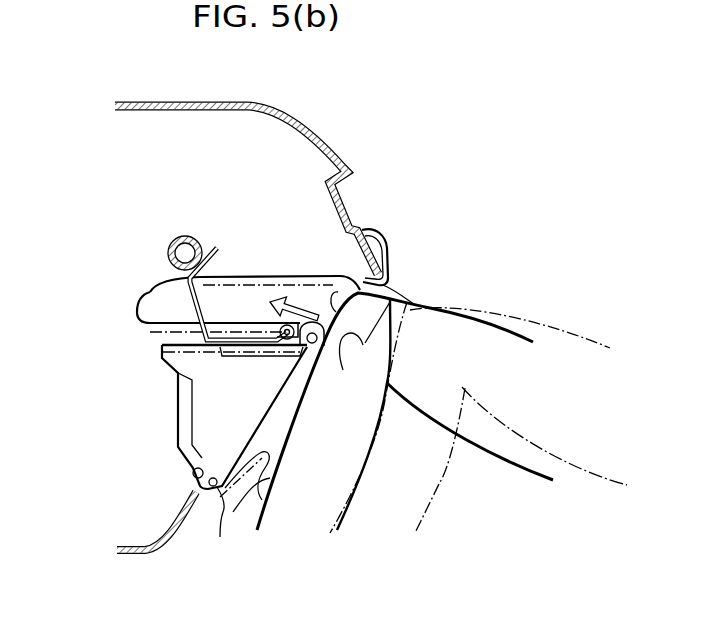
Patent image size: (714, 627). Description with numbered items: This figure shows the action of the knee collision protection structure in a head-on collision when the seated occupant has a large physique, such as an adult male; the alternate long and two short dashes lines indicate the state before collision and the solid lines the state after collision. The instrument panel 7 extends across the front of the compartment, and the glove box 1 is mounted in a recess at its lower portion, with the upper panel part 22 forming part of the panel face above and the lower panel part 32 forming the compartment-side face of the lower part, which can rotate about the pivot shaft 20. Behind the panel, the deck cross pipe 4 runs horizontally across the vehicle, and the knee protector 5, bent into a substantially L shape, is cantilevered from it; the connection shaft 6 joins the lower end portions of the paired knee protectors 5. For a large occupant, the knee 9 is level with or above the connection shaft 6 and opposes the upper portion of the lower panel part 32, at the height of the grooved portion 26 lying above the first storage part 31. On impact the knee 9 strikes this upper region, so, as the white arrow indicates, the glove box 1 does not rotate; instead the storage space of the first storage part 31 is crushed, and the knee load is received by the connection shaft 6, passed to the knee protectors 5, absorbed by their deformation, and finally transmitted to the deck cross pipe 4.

The glove box 1 is at (484, 247).
The deck cross pipe 4 is at (182, 237).
The knee protector 5 is at (183, 313).
The connection shaft 6 is at (282, 339).
The instrument panel 7 is at (293, 116).
The knee 9 is at (400, 302).
The pivot shaft 20 is at (193, 500).
The upper panel part 22 is at (389, 256).
The grooved portion 26 is at (160, 352).
The first storage part 31 is at (217, 412).
The lower panel part 32 is at (220, 537).